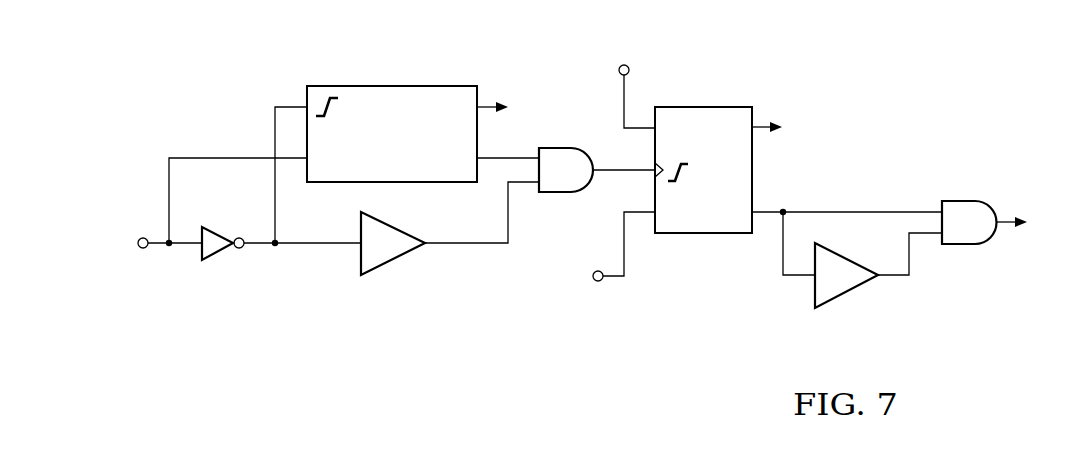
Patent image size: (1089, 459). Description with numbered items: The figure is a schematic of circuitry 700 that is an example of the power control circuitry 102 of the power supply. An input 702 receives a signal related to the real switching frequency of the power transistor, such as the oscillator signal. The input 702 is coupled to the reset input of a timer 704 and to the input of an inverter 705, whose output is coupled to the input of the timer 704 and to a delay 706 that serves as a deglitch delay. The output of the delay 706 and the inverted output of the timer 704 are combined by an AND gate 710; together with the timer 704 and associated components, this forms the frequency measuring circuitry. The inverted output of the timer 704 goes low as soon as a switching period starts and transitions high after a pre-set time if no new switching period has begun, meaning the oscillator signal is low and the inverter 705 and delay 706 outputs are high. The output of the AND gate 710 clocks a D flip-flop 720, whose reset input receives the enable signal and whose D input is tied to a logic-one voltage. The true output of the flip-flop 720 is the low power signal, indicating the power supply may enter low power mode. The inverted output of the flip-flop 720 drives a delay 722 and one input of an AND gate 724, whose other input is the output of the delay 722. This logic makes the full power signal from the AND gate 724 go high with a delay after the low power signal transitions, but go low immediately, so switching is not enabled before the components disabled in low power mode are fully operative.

The power control circuitry 102 is at (950, 70).
The circuitry 700 is at (822, 59).
The input 702 is at (130, 172).
The timer 704 is at (391, 85).
The inverter 705 is at (220, 255).
The delay 706 is at (395, 263).
The AND gate 710 is at (560, 148).
The D flip-flop 720 is at (710, 107).
The delay 722 is at (850, 297).
The AND gate 724 is at (963, 200).